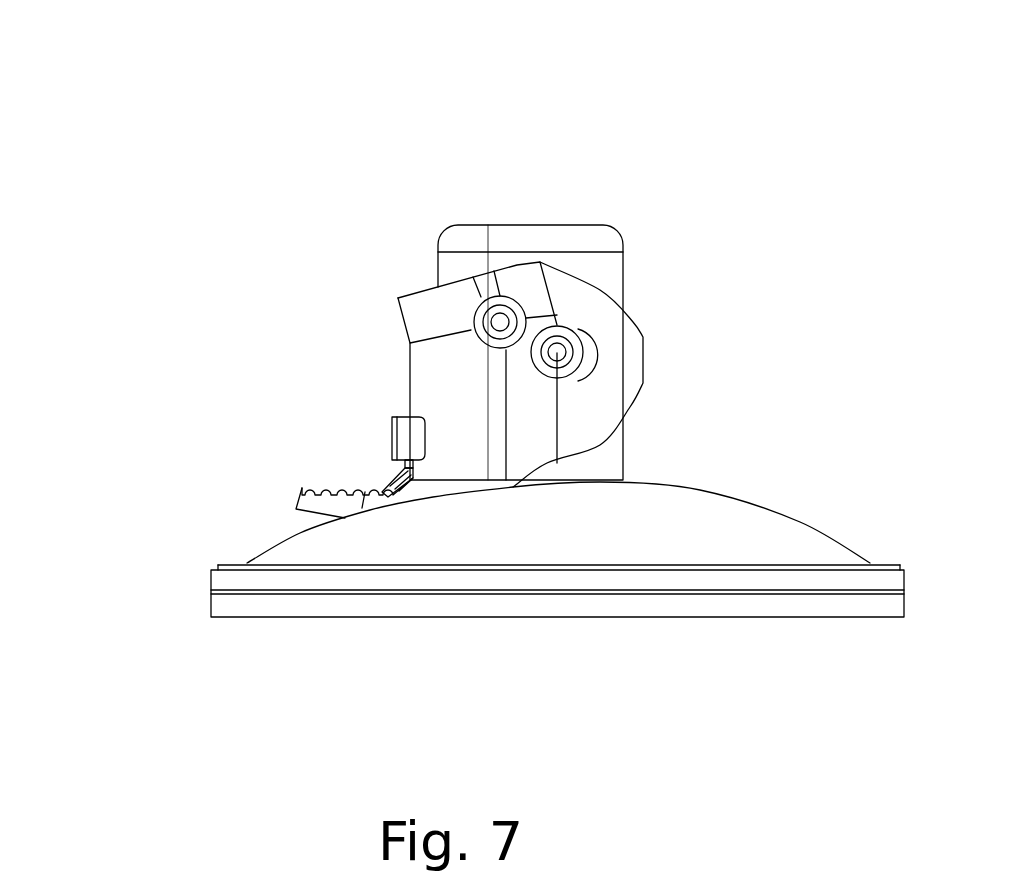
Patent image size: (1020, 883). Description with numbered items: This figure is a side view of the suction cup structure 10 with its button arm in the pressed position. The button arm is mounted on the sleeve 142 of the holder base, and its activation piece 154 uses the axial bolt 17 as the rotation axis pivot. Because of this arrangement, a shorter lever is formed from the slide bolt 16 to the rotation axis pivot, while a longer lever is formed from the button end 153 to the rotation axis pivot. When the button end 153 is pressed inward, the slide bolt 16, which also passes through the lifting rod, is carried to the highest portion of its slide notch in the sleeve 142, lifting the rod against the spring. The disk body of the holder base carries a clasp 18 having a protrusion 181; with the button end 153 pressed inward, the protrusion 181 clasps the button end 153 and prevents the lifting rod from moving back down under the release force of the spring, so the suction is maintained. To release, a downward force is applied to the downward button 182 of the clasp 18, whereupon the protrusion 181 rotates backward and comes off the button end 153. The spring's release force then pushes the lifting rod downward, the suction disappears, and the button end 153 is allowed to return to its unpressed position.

The suction cup structure 10 is at (455, 57).
The sleeve 142 is at (615, 275).
The button end 153 is at (407, 417).
The activation piece 154 is at (541, 425).
The slide bolt 16 is at (557, 352).
The axial bolt 17 is at (500, 322).
The clasp 18 is at (312, 452).
The protrusion 181 is at (393, 473).
The downward button 182 is at (300, 488).